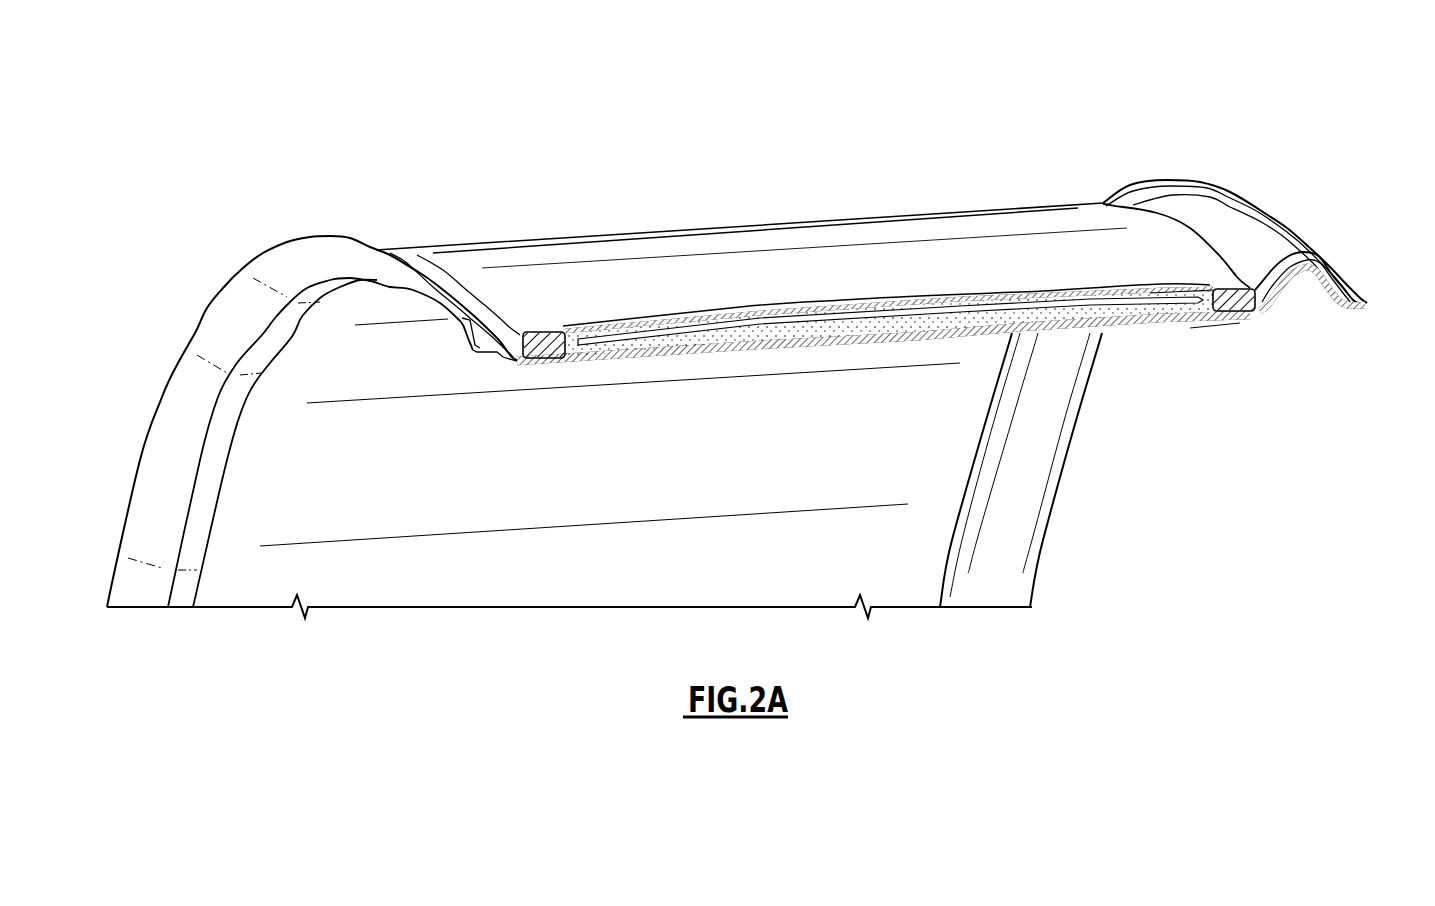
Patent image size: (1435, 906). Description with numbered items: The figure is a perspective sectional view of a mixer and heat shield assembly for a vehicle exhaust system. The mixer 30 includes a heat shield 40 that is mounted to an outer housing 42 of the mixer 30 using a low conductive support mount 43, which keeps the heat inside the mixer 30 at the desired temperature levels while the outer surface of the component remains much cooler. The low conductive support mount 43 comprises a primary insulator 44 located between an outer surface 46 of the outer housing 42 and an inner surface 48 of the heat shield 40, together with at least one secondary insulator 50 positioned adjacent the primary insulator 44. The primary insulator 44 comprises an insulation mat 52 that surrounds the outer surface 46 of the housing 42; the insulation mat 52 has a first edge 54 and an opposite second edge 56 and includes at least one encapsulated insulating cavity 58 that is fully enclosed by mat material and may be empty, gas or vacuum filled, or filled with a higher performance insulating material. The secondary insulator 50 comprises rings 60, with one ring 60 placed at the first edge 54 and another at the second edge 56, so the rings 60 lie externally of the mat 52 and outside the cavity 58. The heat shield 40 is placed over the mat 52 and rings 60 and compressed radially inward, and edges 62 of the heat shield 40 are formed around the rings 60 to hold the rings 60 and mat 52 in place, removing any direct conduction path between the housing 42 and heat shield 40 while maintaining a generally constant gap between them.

The mixer 30 is at (302, 166).
The heat shield 40 is at (687, 247).
The outer housing 42 is at (1367, 305).
The low conductive support mount 43 is at (1221, 355).
The primary insulator 44 is at (1192, 338).
The outer surface 46 is at (1323, 252).
The inner surface 48 is at (1253, 287).
The secondary insulator 50 is at (555, 332).
The insulation mat 52 is at (1075, 303).
The first edge 54 is at (564, 328).
The second edge 56 is at (1222, 288).
The encapsulated insulating cavity 58 is at (817, 330).
The ring 60 is at (533, 331).
The edges 62 is at (417, 255).